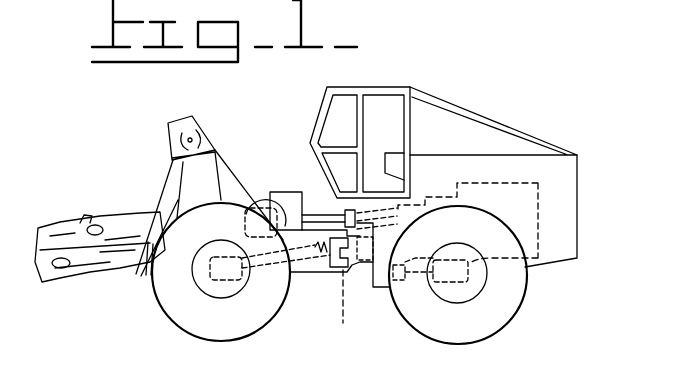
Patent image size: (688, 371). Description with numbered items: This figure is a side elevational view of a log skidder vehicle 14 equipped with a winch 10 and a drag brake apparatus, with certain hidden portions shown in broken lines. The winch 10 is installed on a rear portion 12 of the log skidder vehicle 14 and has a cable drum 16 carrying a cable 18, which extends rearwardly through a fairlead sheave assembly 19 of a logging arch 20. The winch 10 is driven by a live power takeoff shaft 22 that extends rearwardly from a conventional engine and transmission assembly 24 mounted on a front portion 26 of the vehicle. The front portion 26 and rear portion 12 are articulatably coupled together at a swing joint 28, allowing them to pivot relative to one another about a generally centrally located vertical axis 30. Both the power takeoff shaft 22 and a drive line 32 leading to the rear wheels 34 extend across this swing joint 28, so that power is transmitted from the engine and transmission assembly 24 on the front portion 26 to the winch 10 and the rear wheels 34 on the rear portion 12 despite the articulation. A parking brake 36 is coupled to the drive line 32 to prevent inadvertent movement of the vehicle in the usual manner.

The winch 10 is at (252, 172).
The rear portion 12 is at (320, 268).
The log skidder vehicle 14 is at (461, 105).
The cable drum 16 is at (273, 190).
The cable 18 is at (167, 165).
The fairlead sheave assembly 19 is at (167, 110).
The logging arch 20 is at (193, 178).
The live power takeoff shaft 22 is at (318, 212).
The engine and transmission assembly 24 is at (542, 190).
The front portion 26 is at (562, 247).
The swing joint 28 is at (336, 284).
The vertical axis 30 is at (345, 315).
The drive line 32 is at (248, 262).
The rear wheels 34 is at (175, 300).
The parking brake 36 is at (393, 303).